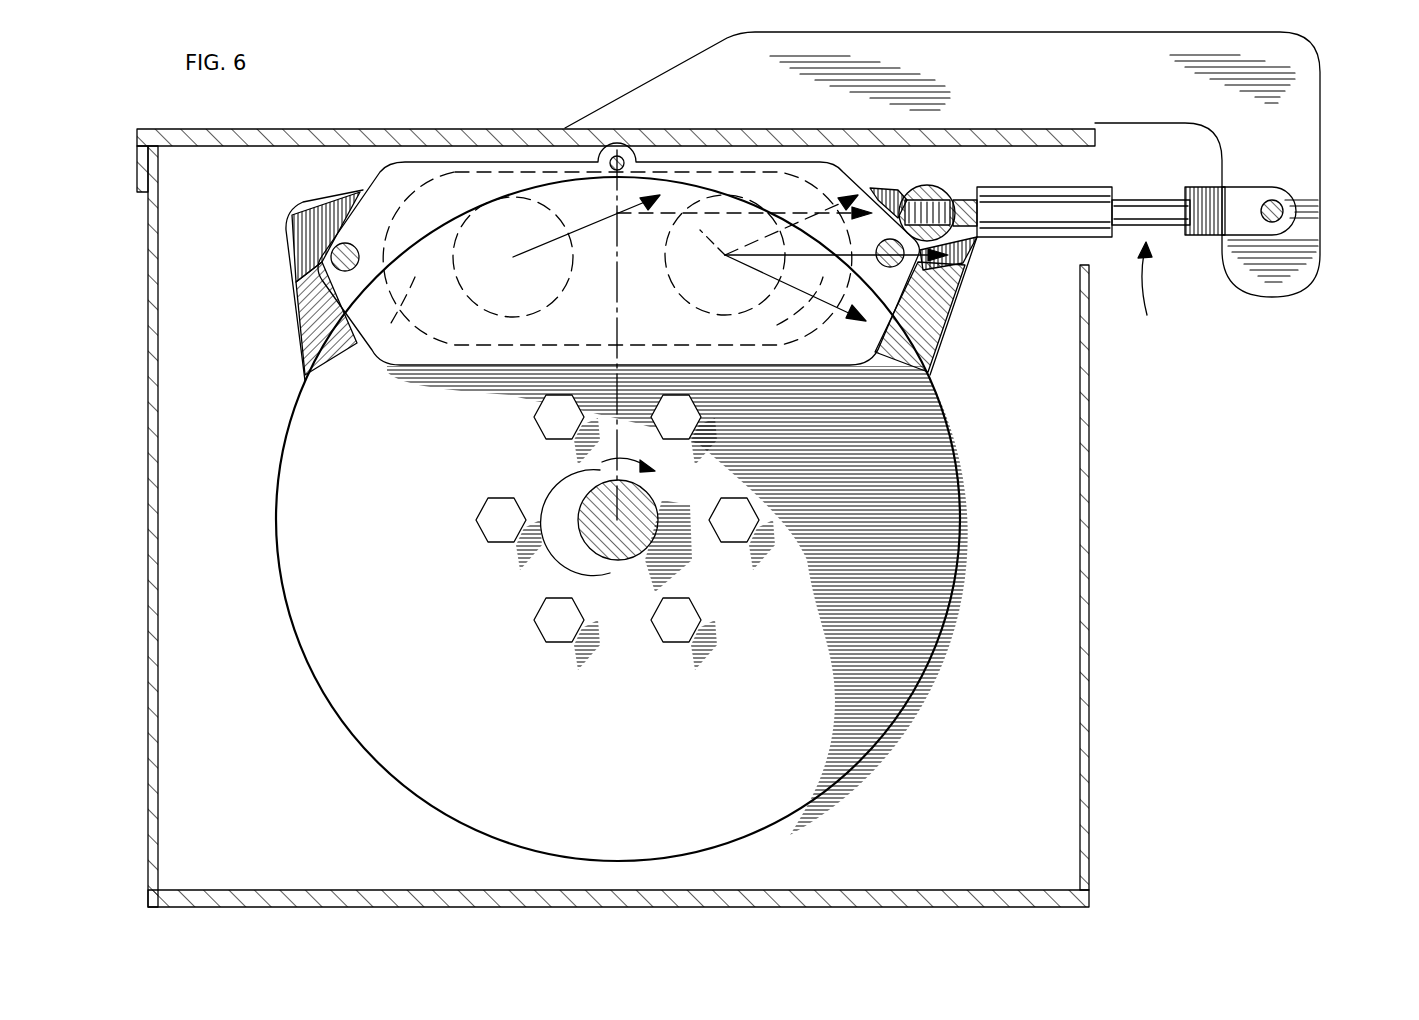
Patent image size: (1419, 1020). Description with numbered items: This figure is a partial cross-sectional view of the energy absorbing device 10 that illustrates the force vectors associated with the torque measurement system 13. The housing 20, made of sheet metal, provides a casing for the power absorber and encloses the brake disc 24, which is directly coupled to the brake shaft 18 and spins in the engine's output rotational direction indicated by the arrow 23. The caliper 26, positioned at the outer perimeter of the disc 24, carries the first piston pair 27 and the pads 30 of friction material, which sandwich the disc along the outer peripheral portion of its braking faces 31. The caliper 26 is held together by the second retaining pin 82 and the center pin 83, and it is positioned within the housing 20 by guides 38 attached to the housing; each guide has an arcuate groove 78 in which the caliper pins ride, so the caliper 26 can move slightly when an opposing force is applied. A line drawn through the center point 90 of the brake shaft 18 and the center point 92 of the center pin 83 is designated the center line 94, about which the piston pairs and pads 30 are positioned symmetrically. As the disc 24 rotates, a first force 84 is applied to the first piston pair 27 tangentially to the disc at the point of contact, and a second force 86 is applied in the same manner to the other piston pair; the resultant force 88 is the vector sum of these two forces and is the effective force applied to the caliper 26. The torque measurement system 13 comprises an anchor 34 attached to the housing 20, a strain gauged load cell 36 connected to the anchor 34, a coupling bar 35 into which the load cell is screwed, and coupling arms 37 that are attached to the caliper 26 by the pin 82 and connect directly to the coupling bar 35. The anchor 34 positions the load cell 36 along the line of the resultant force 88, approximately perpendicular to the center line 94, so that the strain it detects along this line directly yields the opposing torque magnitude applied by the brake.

The energy absorbing device 10 is at (1140, 697).
The torque measurement system 13 is at (1152, 288).
The brake shaft 18 is at (660, 487).
The housing 20 is at (1090, 508).
The arrow 23 is at (568, 490).
The brake disc 24 is at (940, 645).
The caliper 26 is at (385, 368).
The first piston pair 27 is at (515, 332).
The pads 30 is at (395, 316).
The braking faces 31 is at (372, 705).
The anchor 34 is at (1322, 118).
The coupling bar 35 is at (945, 198).
The strain gauged load cell 36 is at (1048, 190).
The coupling arms 37 is at (915, 185).
The guides 38 is at (303, 215).
The guide groove 78 is at (305, 320).
The second retaining pin 82 is at (358, 250).
The center pin 83 is at (600, 158).
The first force 84 is at (605, 222).
The second force 86 is at (778, 316).
The resultant force 88 is at (715, 230).
The center point of the brake shaft 90 is at (620, 556).
The center point of the center pin 92 is at (622, 157).
The center line 94 is at (618, 420).